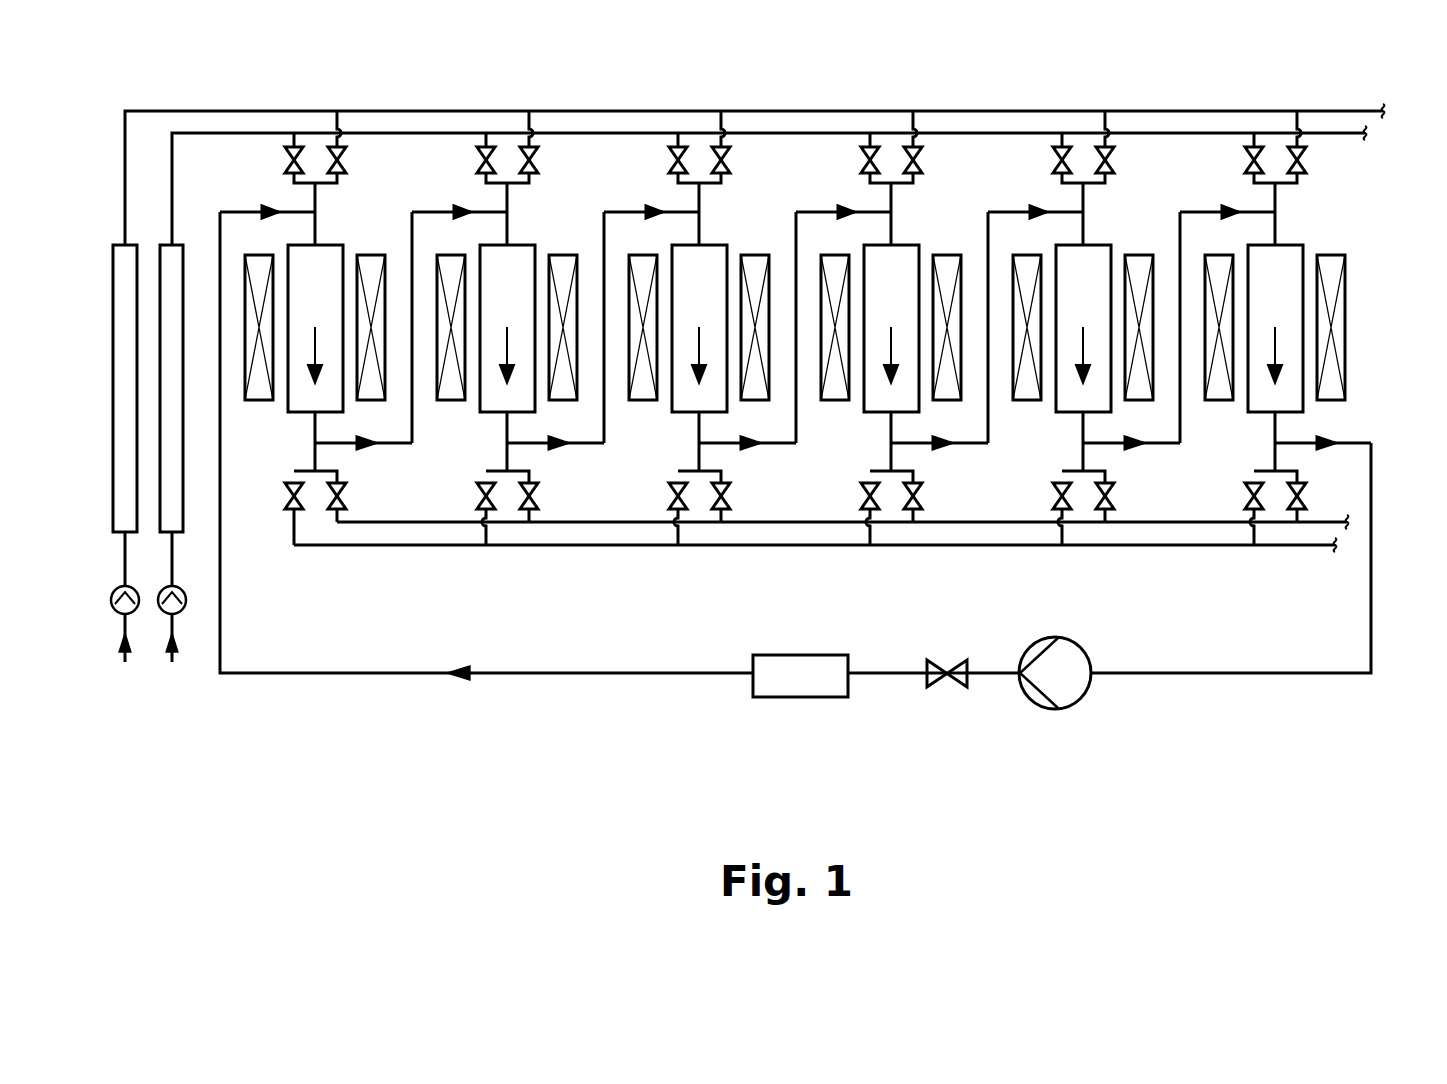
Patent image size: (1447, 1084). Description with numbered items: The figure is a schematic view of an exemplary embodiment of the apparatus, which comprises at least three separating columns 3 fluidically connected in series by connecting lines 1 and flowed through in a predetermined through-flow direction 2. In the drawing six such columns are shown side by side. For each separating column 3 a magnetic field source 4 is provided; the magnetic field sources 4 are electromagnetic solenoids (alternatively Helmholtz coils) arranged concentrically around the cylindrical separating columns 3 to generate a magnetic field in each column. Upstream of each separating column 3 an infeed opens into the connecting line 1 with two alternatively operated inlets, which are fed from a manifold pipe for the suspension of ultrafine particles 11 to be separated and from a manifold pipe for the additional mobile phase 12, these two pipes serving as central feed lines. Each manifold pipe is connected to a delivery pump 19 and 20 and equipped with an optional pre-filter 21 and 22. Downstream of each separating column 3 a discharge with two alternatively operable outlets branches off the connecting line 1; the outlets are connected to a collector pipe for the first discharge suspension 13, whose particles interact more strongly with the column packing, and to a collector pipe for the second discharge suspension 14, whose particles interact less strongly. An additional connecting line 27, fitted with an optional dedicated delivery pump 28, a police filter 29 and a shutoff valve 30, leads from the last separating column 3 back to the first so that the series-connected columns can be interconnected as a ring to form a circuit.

The connecting line 1 is at (418, 445).
The through-flow direction 2 is at (315, 348).
The separating column 3 is at (337, 288).
The magnetic field source 4 is at (368, 262).
The manifold pipe for the suspension of ultrafine particles 11 is at (125, 182).
The manifold pipe for the additional mobile phase 12 is at (172, 187).
The collector pipe for first discharge suspension 13 is at (756, 522).
The collector pipe for second discharge suspension 14 is at (752, 546).
The delivery pump 19 is at (118, 605).
The delivery pump 20 is at (173, 603).
The pre-filter 21 is at (123, 392).
The pre-filter 22 is at (172, 390).
The additional connecting line 27 is at (1225, 677).
The dedicated delivery pump 28 is at (1065, 683).
The police filter 29 is at (788, 683).
The shutoff valve 30 is at (935, 680).